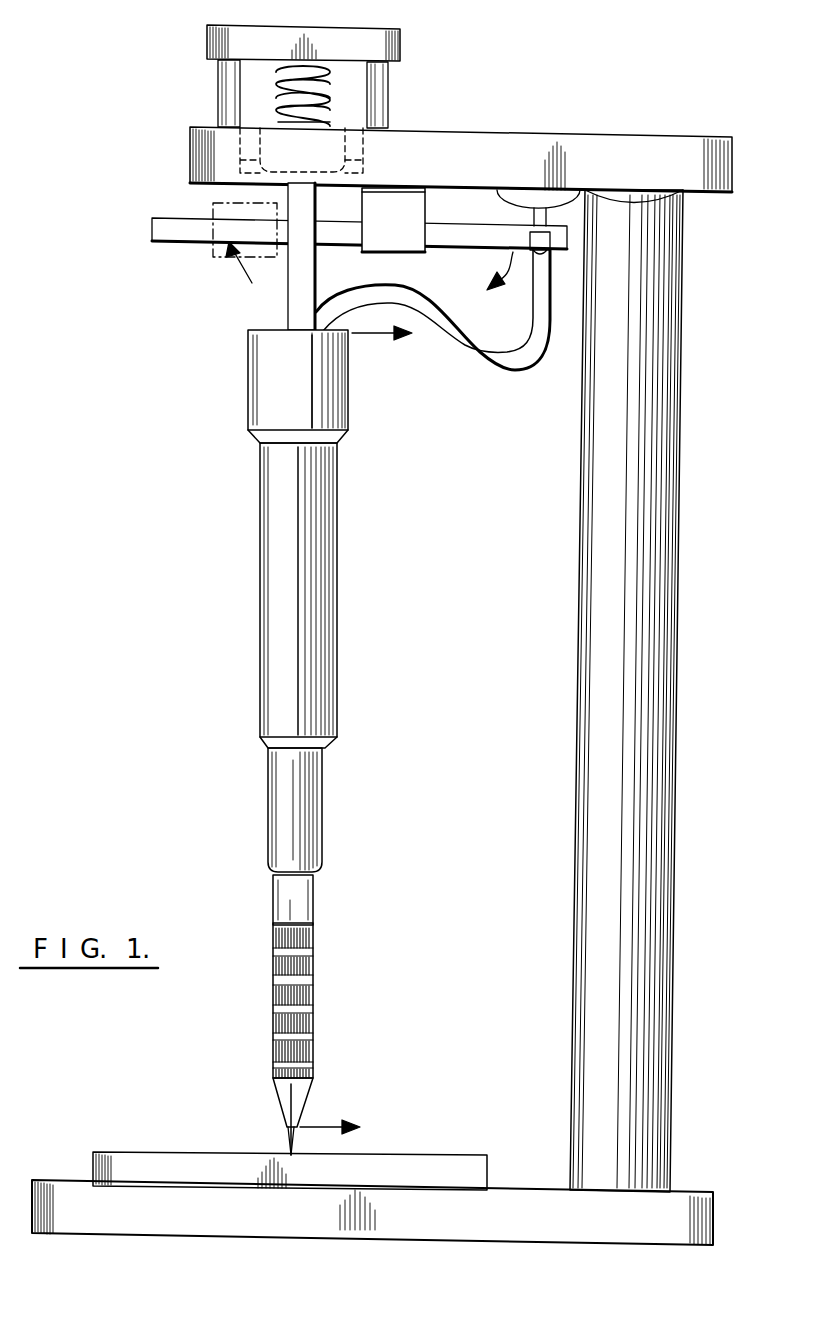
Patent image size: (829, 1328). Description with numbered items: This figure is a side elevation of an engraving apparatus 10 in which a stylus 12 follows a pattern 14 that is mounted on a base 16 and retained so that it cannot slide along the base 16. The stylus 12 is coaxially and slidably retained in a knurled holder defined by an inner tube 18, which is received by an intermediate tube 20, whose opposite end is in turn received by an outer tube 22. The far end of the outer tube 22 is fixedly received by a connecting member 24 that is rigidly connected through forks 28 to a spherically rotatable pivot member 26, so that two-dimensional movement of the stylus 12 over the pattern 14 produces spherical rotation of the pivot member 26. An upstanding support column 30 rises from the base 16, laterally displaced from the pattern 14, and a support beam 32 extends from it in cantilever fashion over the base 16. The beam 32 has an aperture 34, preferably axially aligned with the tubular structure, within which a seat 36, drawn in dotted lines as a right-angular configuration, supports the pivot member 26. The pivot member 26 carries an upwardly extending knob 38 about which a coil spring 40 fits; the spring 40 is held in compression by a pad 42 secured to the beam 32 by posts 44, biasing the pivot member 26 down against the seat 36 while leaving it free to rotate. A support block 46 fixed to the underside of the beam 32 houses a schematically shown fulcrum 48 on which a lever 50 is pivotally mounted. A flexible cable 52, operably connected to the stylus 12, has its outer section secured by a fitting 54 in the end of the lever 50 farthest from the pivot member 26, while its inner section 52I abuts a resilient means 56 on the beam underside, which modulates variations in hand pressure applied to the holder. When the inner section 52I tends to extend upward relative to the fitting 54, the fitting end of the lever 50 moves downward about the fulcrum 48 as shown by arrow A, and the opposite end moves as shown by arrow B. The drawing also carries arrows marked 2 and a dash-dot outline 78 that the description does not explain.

The engraving apparatus 10 is at (260, 742).
The stylus 12 is at (287, 1140).
The pattern 14 is at (207, 1145).
The base 16 is at (66, 1191).
The inner tube 18 is at (300, 901).
The intermediate tube 20 is at (305, 808).
The outer tube 22 is at (318, 593).
The connecting member 24 is at (328, 396).
The pivot member 26 is at (266, 176).
The forks 28 is at (290, 294).
The support column 30 is at (590, 890).
The support beam 32 is at (553, 142).
The aperture 34 is at (262, 168).
The seat 36 is at (360, 172).
The knob 38 is at (338, 120).
The coil spring 40 is at (330, 82).
The pad 42 is at (232, 33).
The posts 44 is at (390, 75).
The support block 46 is at (410, 200).
The fulcrum 48 is at (398, 236).
The lever 50 is at (160, 229).
The flexible cable 52 is at (508, 368).
The inner section of flexible cable 52I is at (547, 217).
The fitting 54 is at (546, 242).
The resilient means 56 is at (516, 204).
The sensor region 78 is at (196, 250).
The arrow A is at (502, 283).
The arrow B is at (238, 269).
The section line 2 is at (368, 733).